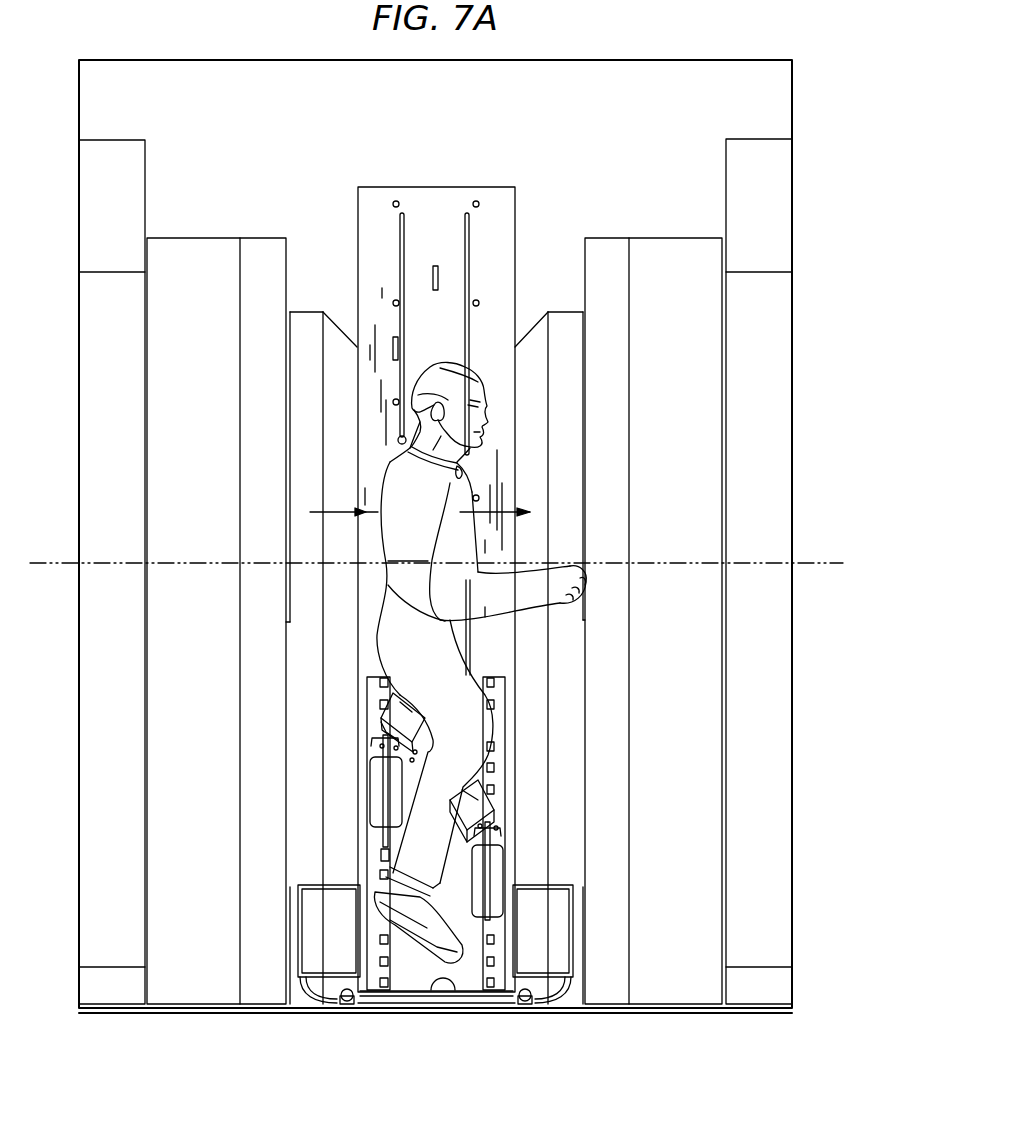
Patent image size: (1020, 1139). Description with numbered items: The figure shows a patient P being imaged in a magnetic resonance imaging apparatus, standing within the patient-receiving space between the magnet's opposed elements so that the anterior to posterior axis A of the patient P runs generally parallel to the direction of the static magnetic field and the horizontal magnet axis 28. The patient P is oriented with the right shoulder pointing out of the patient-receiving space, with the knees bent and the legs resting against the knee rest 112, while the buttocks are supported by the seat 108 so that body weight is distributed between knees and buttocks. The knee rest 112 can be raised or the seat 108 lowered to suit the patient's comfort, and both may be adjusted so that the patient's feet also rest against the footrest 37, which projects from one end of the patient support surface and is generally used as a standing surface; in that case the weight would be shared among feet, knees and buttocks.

The seat 108 is at (393, 718).
The knee rest 112 is at (478, 804).
The footrest 37 is at (455, 992).
The magnet axis 28 is at (810, 563).
The patient P is at (482, 373).
The anterior to posterior axis A is at (507, 507).